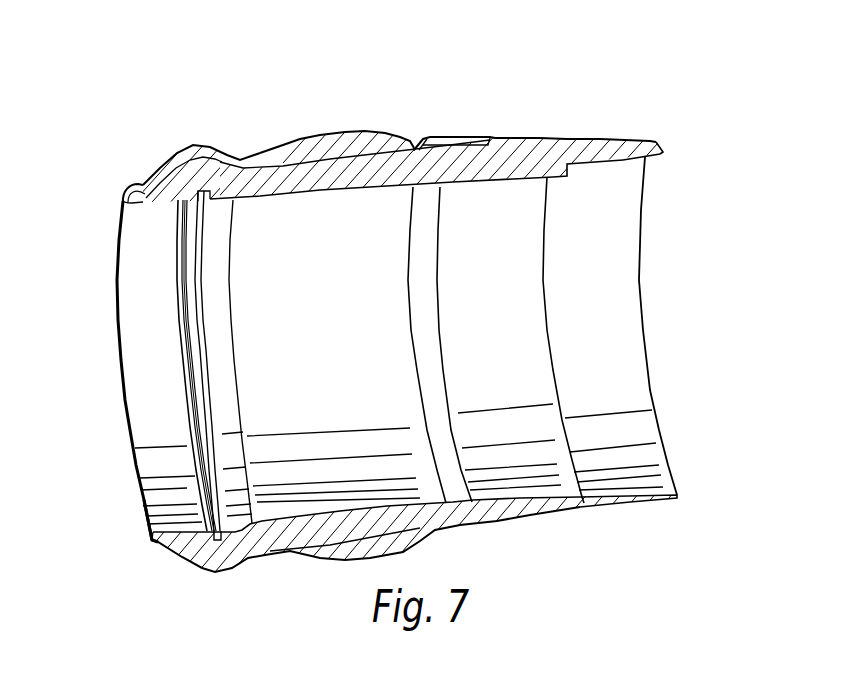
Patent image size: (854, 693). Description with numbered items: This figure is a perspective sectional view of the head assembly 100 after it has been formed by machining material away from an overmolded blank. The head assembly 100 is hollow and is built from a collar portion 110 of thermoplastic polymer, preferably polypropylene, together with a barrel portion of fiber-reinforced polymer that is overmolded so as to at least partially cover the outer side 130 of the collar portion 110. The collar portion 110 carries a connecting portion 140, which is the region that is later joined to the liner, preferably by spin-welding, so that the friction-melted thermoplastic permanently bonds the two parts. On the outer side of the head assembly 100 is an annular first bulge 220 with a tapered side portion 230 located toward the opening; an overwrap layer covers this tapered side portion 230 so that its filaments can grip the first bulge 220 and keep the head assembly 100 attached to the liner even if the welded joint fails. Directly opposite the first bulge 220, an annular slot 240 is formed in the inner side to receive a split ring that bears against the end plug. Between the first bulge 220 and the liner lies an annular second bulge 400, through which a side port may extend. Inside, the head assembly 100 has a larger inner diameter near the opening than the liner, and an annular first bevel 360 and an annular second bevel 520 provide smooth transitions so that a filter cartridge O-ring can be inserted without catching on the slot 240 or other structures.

The head assembly 100 is at (657, 348).
The collar portion 110 is at (465, 138).
The outer side of collar portion 130 is at (568, 150).
The connecting portion 140 is at (623, 160).
The first bulge 220 is at (197, 158).
The tapered side portion 230 is at (157, 178).
The annular slot 240 is at (158, 488).
The first bevel 360 is at (240, 484).
The second bulge 400 is at (358, 132).
The second bevel 520 is at (437, 400).